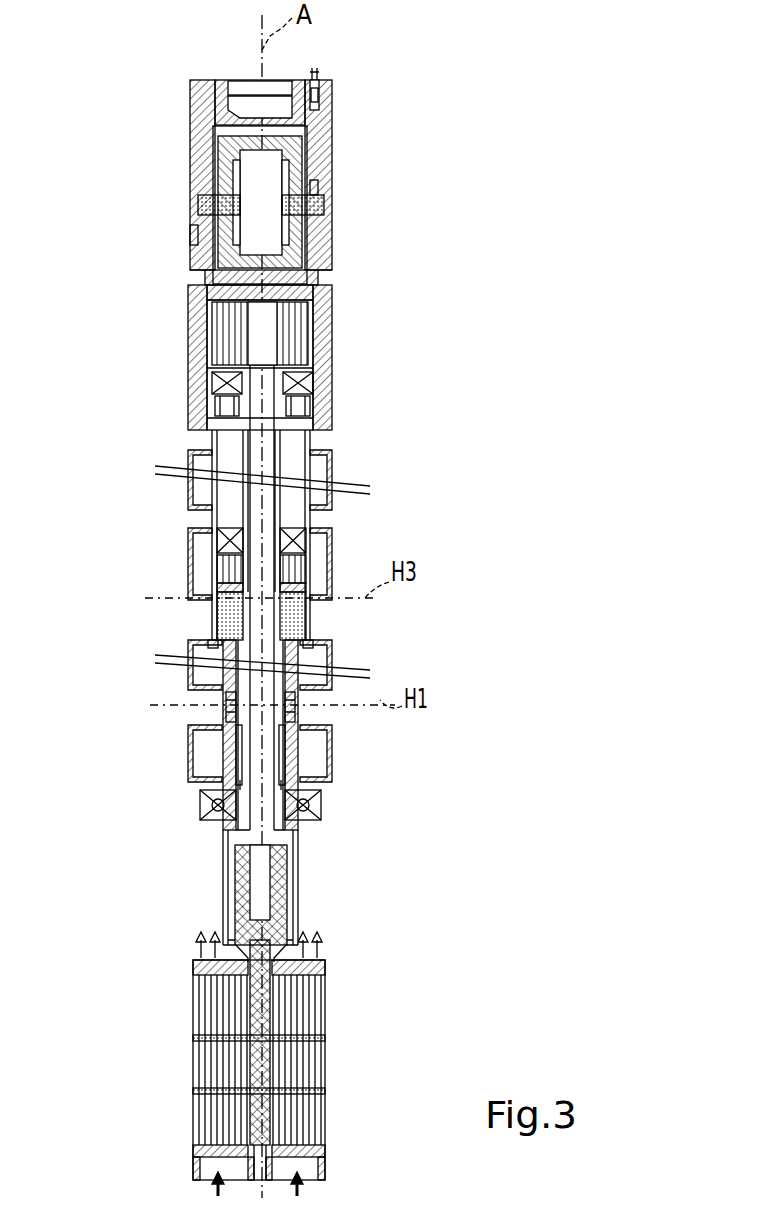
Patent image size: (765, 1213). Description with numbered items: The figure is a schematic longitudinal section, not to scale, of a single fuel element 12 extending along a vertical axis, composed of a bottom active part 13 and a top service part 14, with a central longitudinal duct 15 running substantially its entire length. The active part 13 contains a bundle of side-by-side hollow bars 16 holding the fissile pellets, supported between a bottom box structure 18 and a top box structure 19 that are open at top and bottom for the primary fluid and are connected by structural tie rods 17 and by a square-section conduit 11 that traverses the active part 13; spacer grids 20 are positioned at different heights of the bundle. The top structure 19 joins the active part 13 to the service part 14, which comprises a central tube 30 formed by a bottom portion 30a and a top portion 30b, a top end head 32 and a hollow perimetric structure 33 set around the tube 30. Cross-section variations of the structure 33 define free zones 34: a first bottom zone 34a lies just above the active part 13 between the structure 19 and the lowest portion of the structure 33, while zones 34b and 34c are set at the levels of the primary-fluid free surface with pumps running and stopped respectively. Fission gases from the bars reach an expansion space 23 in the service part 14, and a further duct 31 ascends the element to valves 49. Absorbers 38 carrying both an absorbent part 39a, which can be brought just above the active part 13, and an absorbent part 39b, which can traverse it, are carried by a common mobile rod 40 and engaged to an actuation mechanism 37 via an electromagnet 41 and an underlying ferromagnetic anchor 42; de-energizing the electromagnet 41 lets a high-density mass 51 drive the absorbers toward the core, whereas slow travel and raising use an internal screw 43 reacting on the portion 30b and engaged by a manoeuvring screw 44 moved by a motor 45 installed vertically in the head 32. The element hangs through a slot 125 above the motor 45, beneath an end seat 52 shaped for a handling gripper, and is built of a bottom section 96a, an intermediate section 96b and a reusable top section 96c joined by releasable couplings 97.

The conduit 11 is at (270, 1116).
The fuel element 12 is at (392, 298).
The bottom active part 13 is at (160, 1054).
The top service part 14 is at (138, 678).
The central longitudinal duct 15 is at (300, 814).
The bars 16 is at (292, 1032).
The structural tie rods 17 is at (325, 1071).
The bottom box structure 18 is at (325, 1152).
The top box structure 19 is at (320, 962).
The spacer grids 20 is at (325, 1040).
The expansion space 23 is at (312, 746).
The central tube 30 is at (292, 610).
The bottom portion of central tube 30a is at (282, 692).
The top portion of central tube 30b is at (305, 470).
The further duct 31 is at (318, 100).
The top end head 32 is at (190, 180).
The perimetric structure 33 is at (318, 566).
The free zones 34 is at (324, 514).
The first bottom zone 34a is at (312, 866).
The free zone at level H1 34b is at (190, 700).
The free zone at level H3 34c is at (192, 612).
The actuation mechanism 37 is at (300, 396).
The absorbers 38 is at (258, 1120).
The absorbent part 39a is at (236, 896).
The absorbent part 39b is at (248, 1012).
The mobile rod 40 is at (298, 770).
The electromagnet 41 is at (225, 566).
The ferromagnetic anchor 42 is at (228, 586).
The internal screw 43 is at (228, 536).
The manoeuvring screw 44 is at (245, 480).
The motor 45 is at (292, 332).
The valves 49 is at (318, 82).
The mass 51 is at (300, 622).
The end seats 52 is at (240, 100).
The bottom section 96a is at (200, 960).
The intermediate section 96b is at (188, 756).
The top section 96c is at (190, 490).
The releasable couplings 97 is at (202, 644).
The slots 125 is at (265, 212).